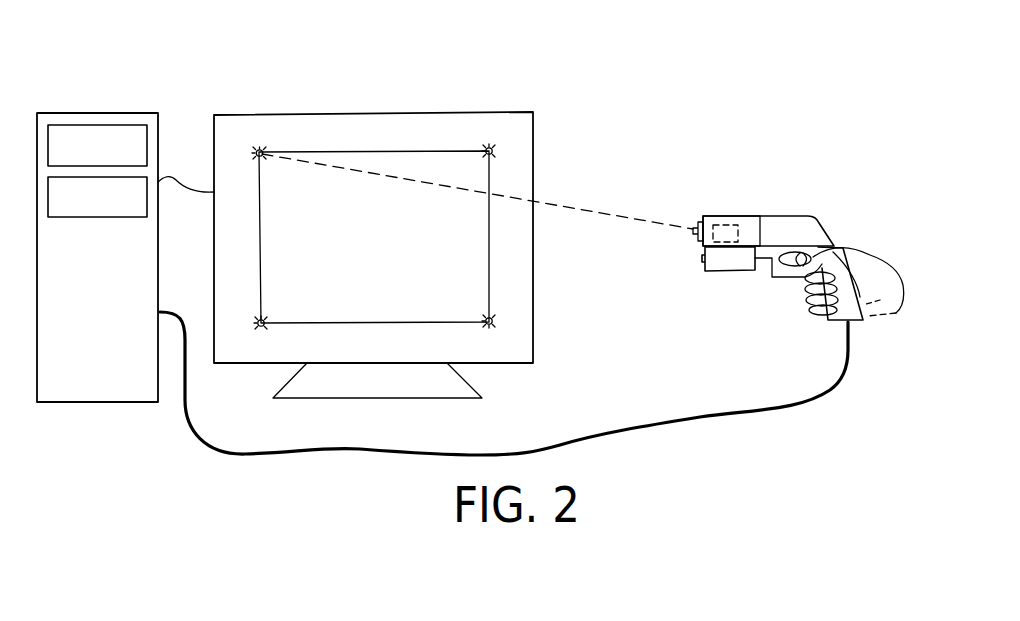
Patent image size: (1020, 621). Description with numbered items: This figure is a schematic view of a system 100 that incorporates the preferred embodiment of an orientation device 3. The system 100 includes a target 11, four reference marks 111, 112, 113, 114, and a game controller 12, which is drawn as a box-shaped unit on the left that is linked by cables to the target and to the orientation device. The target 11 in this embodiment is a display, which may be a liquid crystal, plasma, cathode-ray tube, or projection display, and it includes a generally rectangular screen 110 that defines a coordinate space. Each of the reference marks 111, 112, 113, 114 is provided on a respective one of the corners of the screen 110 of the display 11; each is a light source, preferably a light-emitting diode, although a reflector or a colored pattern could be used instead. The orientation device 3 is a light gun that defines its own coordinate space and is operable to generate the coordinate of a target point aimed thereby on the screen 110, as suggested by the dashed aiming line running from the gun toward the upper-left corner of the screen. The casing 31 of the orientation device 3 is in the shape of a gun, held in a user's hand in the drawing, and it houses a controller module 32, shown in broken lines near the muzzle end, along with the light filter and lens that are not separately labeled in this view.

The system 100 is at (141, 78).
The game controller 12 is at (66, 113).
The target 11 is at (360, 112).
The screen 110 is at (403, 168).
The reference mark 111 is at (259, 148).
The reference mark 112 is at (493, 150).
The reference mark 113 is at (493, 320).
The reference mark 114 is at (261, 327).
The orientation device 3 is at (778, 202).
The casing 31 is at (723, 216).
The controller module 32 is at (738, 224).